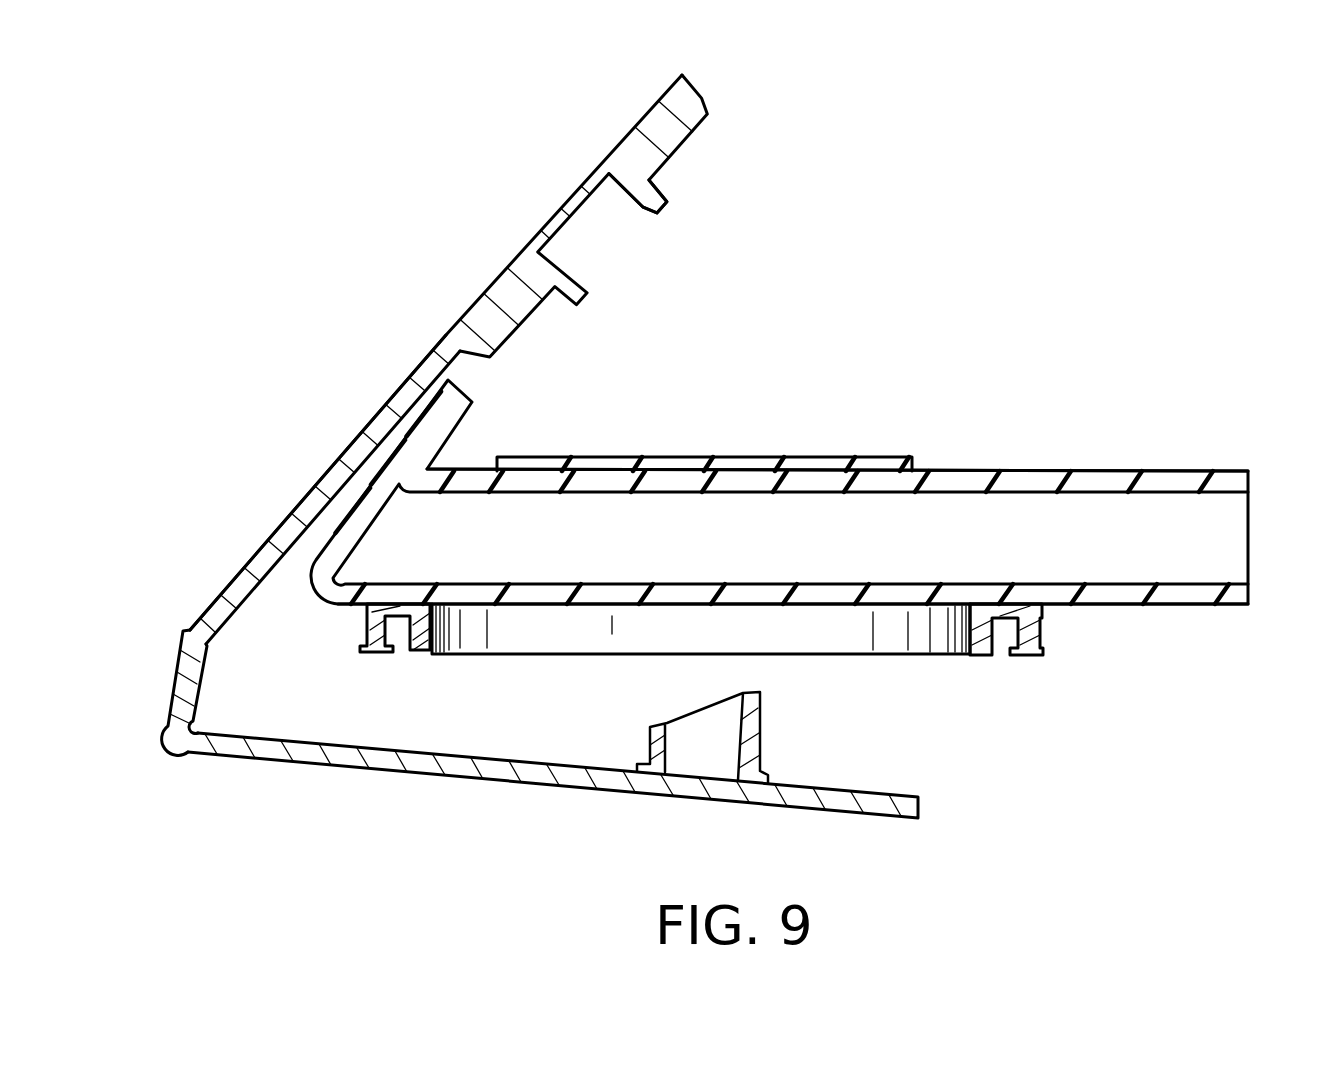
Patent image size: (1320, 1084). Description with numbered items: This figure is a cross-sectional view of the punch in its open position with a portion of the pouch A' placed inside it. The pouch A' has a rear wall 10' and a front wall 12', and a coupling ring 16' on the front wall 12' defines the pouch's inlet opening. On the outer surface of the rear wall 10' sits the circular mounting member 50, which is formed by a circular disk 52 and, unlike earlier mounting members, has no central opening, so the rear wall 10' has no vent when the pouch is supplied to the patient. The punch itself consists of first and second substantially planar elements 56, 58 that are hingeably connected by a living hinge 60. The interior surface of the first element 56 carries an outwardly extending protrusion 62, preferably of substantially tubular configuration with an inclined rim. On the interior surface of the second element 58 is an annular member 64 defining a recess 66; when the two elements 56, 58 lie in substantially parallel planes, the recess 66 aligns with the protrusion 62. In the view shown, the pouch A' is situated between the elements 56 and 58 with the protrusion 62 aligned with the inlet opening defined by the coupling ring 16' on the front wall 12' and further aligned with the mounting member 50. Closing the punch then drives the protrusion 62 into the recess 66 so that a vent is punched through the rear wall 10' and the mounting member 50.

The rear wall 10' is at (837, 461).
The front wall 12' is at (793, 621).
The coupling ring 16' is at (730, 648).
The mounting member 50 is at (914, 445).
The circular disk 52 is at (613, 455).
The first planar element 56 is at (492, 758).
The second planar element 58 is at (307, 522).
The living hinge 60 is at (183, 631).
The protrusion 62 is at (760, 695).
The annular member 64 is at (692, 133).
The recess 66 is at (645, 213).
The pouch A' is at (1276, 447).